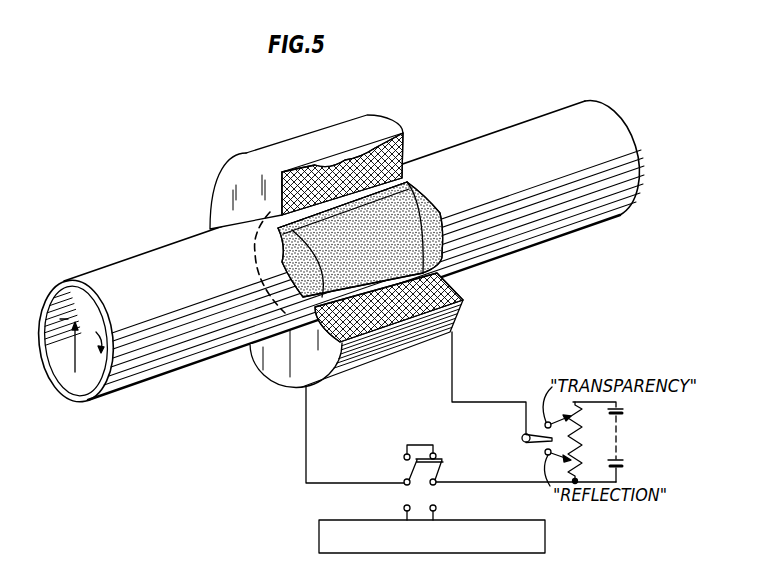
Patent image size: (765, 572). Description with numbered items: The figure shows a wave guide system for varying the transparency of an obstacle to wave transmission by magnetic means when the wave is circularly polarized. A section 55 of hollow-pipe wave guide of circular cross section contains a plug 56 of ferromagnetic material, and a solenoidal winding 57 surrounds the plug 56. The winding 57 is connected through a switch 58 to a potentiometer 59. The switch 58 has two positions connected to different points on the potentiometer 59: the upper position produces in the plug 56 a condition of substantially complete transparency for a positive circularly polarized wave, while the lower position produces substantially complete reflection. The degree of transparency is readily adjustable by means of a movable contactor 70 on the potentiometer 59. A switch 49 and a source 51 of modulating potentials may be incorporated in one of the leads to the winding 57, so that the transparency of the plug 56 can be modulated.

The switch 49 is at (443, 463).
The source 51 is at (319, 531).
The section of hollow-pipe wave guide 55 is at (93, 387).
The plug 56 is at (410, 203).
The solenoidal winding 57 is at (465, 296).
The switch 58 is at (522, 436).
The potentiometer 59 is at (588, 425).
The movable contactor 70 is at (547, 422).